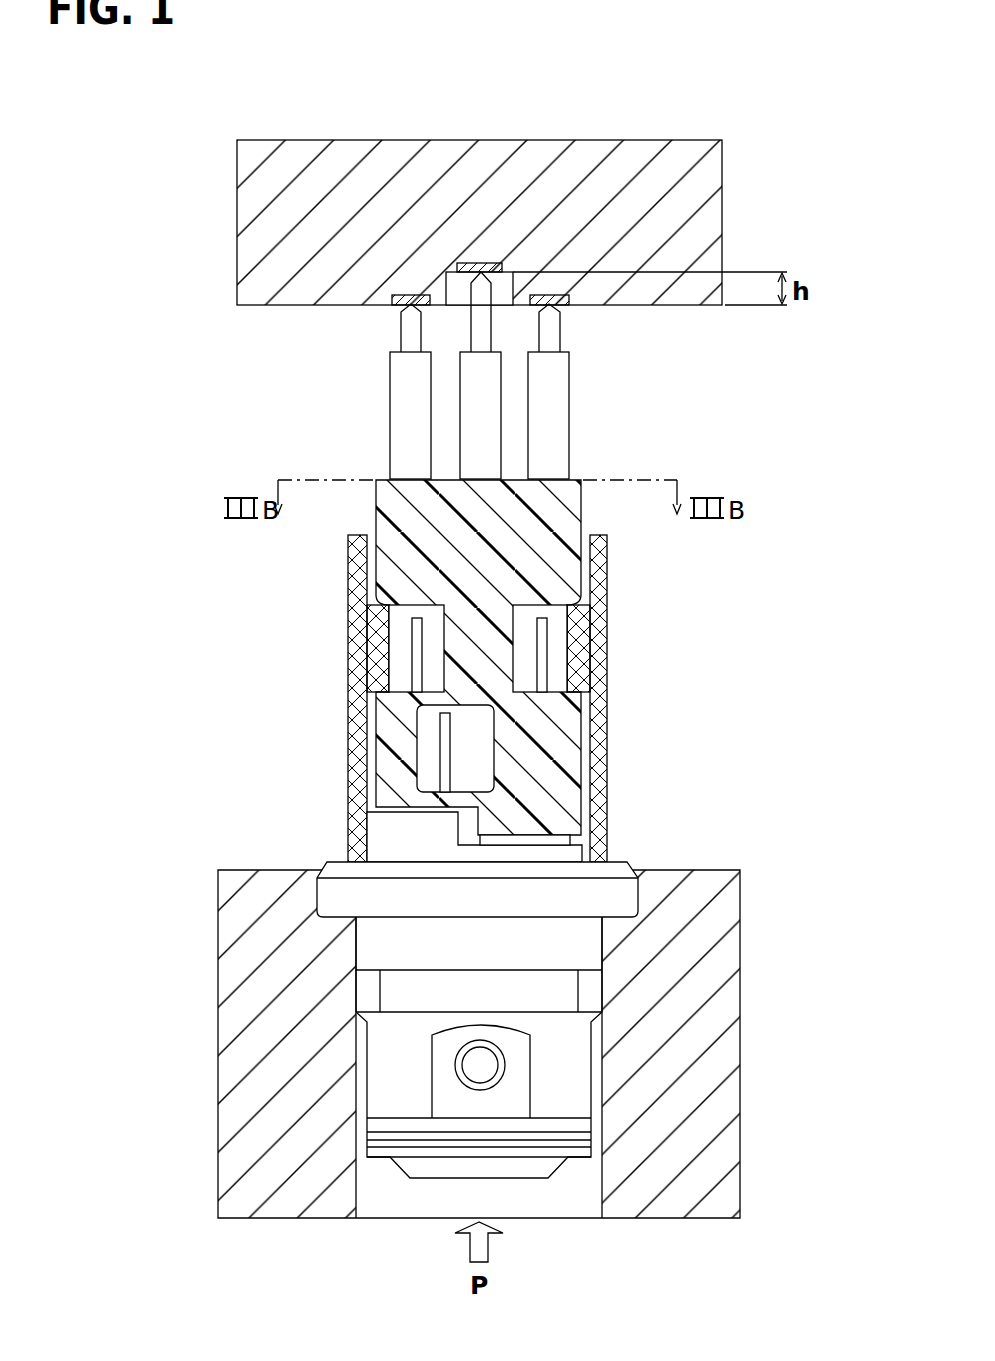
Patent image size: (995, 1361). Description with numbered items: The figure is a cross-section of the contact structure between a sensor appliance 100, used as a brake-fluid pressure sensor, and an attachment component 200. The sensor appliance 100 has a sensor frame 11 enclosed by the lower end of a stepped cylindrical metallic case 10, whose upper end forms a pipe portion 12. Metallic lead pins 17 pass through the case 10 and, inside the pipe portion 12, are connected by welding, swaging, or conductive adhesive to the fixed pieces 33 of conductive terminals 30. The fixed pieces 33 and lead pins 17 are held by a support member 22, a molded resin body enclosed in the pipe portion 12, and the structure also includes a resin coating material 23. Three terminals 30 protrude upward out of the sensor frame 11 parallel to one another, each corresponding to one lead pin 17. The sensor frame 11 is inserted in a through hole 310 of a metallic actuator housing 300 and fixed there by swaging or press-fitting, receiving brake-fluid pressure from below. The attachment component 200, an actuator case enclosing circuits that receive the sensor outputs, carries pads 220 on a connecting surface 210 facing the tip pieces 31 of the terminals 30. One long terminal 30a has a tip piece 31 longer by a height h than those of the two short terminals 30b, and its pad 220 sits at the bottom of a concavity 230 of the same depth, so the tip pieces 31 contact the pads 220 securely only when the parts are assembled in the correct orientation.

The case 10 is at (477, 671).
The sensor frame 11 is at (572, 945).
The pipe portion 12 is at (600, 771).
The lead pins 17 is at (417, 668).
The support member 22 is at (560, 567).
The coating material 23 is at (378, 617).
The terminals 30 is at (500, 415).
The long terminal 30a is at (487, 438).
The short terminals 30b is at (408, 397).
The tip pieces 31 is at (410, 342).
The fixed pieces 33 is at (393, 643).
The sensor appliance 100 is at (464, 671).
The attachment component 200 is at (725, 219).
The connecting surface 210 is at (342, 304).
The pads 220 is at (405, 295).
The concavity 230 is at (448, 277).
The actuator housing 300 is at (742, 1012).
The through hole 310 is at (598, 1192).